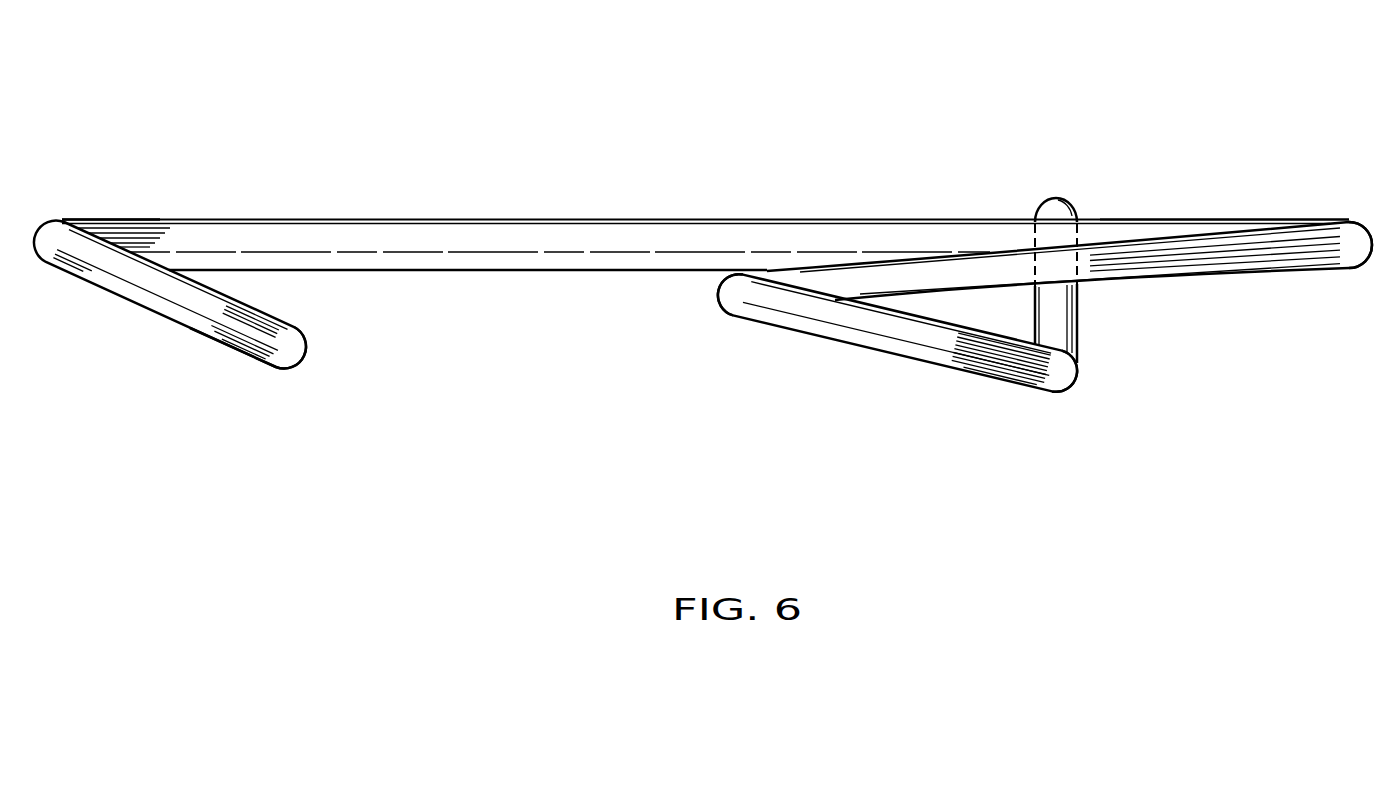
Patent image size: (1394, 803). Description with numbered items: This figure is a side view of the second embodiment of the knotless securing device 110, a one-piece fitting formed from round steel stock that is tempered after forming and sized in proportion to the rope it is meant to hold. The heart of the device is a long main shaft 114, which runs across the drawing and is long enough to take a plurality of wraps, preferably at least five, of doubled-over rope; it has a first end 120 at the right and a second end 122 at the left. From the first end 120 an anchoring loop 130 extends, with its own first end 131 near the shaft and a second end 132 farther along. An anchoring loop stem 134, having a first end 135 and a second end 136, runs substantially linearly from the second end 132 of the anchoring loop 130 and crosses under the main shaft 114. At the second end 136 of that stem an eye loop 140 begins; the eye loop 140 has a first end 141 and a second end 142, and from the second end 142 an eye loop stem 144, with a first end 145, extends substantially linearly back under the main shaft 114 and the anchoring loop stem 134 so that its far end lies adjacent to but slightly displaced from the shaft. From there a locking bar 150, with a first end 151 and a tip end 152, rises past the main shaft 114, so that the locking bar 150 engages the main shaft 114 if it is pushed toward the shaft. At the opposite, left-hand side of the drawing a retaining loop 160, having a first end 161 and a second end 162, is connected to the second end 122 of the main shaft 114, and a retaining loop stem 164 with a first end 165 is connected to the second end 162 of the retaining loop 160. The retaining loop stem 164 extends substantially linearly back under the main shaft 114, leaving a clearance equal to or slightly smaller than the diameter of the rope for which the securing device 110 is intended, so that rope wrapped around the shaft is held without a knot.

The knotless securing device 110 is at (884, 118).
The main shaft 114 is at (501, 220).
The first end of the main shaft 120 is at (1222, 218).
The second end of the main shaft 122 is at (197, 233).
The anchoring loop 130 is at (1363, 221).
The first end of the anchoring loop 131 is at (1267, 218).
The second end of the anchoring loop 132 is at (1313, 253).
The anchoring loop stem 134 is at (970, 253).
The first end of the anchoring loop stem 135 is at (1223, 258).
The second end of the anchoring loop stem 136 is at (880, 277).
The eye loop 140 is at (866, 349).
The first end of the eye loop 141 is at (813, 280).
The second end of the eye loop 142 is at (920, 340).
The eye loop stem 144 is at (1072, 388).
The first end of the eye loop stem 145 is at (1003, 376).
The locking bar 150 is at (1083, 314).
The first end of the locking bar 151 is at (1050, 333).
The tip end of the locking bar 152 is at (1063, 205).
The retaining loop 160 is at (133, 303).
The first end of the retaining loop 161 is at (102, 220).
The second end of the retaining loop 162 is at (271, 365).
The retaining loop stem 164 is at (306, 333).
The first end of the retaining loop stem 165 is at (289, 358).